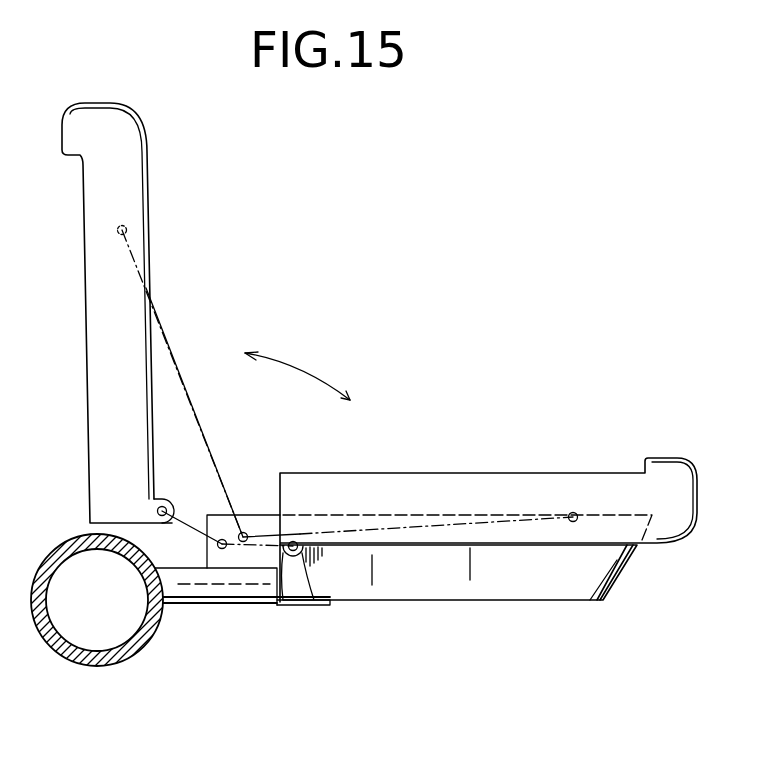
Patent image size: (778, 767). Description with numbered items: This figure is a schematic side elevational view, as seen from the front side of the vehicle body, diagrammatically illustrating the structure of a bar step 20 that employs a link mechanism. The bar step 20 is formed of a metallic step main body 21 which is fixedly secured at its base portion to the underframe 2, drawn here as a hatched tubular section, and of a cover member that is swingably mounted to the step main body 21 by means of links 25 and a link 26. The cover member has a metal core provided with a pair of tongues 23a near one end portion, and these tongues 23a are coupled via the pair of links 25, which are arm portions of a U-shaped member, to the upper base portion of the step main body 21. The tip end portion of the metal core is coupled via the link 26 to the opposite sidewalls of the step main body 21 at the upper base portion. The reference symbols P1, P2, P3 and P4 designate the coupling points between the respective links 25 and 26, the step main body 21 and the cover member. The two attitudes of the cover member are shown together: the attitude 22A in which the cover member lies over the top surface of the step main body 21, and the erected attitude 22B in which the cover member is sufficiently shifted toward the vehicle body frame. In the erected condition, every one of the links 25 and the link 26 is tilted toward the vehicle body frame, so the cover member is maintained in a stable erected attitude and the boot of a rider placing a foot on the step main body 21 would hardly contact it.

The underframe 2 is at (80, 667).
The bar step 20 is at (445, 408).
The step main body 21 is at (436, 592).
The attitude of the cover member 22A is at (485, 473).
The attitude of the cover member 22B is at (150, 203).
The tongues 23a is at (158, 506).
The links 25 is at (214, 538).
The link 26 is at (188, 388).
The coupling point P1 is at (216, 544).
The coupling point P2 is at (290, 602).
The coupling point P3 is at (245, 532).
The coupling point P4 is at (572, 512).